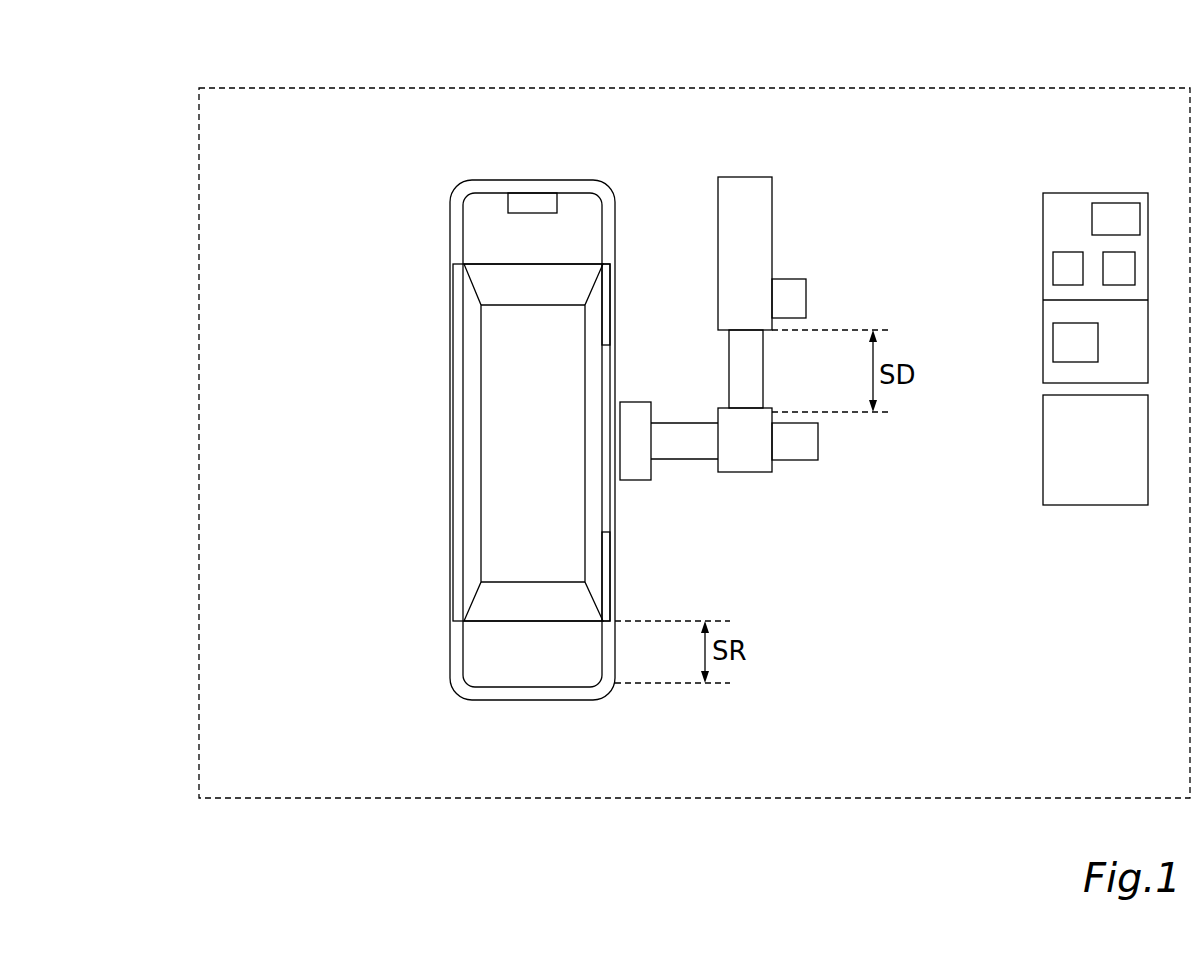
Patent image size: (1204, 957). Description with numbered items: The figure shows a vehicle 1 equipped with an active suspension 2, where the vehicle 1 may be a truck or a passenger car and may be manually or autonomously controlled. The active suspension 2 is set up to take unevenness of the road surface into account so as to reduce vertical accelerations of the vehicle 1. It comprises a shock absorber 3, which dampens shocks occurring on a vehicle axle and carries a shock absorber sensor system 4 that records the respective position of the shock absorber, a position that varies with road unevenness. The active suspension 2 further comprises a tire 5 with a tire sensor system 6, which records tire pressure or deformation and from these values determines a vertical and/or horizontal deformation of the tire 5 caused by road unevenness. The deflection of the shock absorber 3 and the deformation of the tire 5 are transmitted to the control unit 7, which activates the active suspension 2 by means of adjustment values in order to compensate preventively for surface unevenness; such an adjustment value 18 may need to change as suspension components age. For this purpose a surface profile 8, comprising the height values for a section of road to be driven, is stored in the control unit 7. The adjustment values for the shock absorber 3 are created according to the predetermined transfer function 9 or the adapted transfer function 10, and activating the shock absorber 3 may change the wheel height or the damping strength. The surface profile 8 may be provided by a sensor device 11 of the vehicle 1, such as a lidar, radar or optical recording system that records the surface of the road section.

The vehicle 1 is at (195, 84).
The active suspension 2 is at (246, 180).
The shock absorber 3 is at (750, 203).
The shock absorber sensor system 4 is at (795, 290).
The tire 5 is at (470, 425).
The tire sensor system 6 is at (523, 205).
The control unit 7 is at (1074, 232).
The surface profile 8 is at (1077, 282).
The predetermined transfer function 9 is at (1128, 282).
The adapted transfer function 10 is at (1134, 232).
The sensor device 11 is at (1112, 458).
The adjustment value 18 is at (1094, 358).